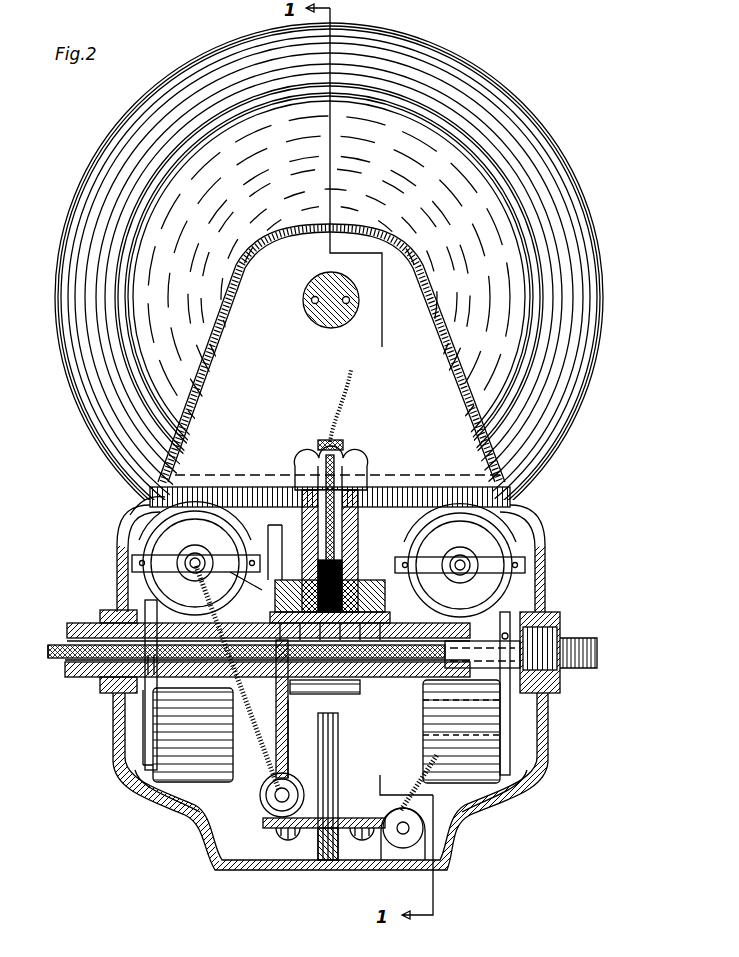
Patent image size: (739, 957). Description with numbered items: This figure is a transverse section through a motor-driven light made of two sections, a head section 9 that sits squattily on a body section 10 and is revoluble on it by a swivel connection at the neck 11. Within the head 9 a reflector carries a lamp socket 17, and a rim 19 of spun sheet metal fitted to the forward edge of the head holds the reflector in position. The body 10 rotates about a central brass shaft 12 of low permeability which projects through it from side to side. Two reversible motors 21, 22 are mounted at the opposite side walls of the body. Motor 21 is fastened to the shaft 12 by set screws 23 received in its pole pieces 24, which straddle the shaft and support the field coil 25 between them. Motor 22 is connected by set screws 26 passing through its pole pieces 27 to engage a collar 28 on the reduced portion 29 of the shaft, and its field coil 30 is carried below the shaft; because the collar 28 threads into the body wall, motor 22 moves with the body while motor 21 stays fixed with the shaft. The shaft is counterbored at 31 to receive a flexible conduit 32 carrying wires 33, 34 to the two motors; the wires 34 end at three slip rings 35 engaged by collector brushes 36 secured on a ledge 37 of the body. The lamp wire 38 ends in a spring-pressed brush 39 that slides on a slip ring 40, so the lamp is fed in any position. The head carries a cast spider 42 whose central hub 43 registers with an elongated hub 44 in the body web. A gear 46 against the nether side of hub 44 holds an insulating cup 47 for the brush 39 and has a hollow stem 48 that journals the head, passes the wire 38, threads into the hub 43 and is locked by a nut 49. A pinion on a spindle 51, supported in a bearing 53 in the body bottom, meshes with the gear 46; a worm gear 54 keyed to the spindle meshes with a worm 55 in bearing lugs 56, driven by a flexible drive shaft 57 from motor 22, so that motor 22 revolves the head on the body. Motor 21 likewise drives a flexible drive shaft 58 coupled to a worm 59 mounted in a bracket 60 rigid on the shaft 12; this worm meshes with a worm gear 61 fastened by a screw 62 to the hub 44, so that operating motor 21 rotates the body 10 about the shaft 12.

The head section 9 is at (207, 372).
The body section 10 is at (112, 773).
The neck 11 is at (122, 505).
The central shaft 12 is at (100, 672).
The lamp socket 17 is at (313, 314).
The rim 19 is at (568, 432).
The reversible motor 21 is at (165, 580).
The reversible motor 22 is at (500, 556).
The set screws 23 is at (235, 660).
The pole pieces 24 is at (150, 702).
The field coil 25 is at (150, 792).
The set screws 26 is at (461, 731).
The pole pieces 27 is at (420, 704).
The collar 28 is at (440, 730).
The reduced portion 29 is at (520, 630).
The field coil 30 is at (488, 770).
The counterbore 31 is at (68, 640).
The flexible conduit 32 is at (50, 660).
The wires 33 is at (163, 685).
The wires 34 is at (362, 720).
The slip rings 35 is at (322, 680).
The collector brushes 36 is at (341, 586).
The ledge 37 is at (333, 698).
The wire 38 is at (352, 408).
The spring-pressed brush 39 is at (239, 583).
The slip ring 40 is at (298, 709).
The spider 42 is at (245, 484).
The central hub 43 is at (370, 470).
The elongated hub 44 is at (302, 500).
The gear 46 is at (460, 573).
The cup 47 is at (196, 561).
The hollow stem 48 is at (319, 440).
The nut 49 is at (356, 454).
The spindle 51 is at (338, 772).
The bearing 53 is at (320, 856).
The worm gear 54 is at (264, 832).
The worm 55 is at (392, 812).
The bearing lugs 56 is at (402, 842).
The flexible drive shaft 57 is at (410, 786).
The flexible drive shaft 58 is at (190, 572).
The worm 59 is at (265, 806).
The bracket 60 is at (262, 772).
The worm gear 61 is at (290, 772).
The screw 62 is at (268, 544).